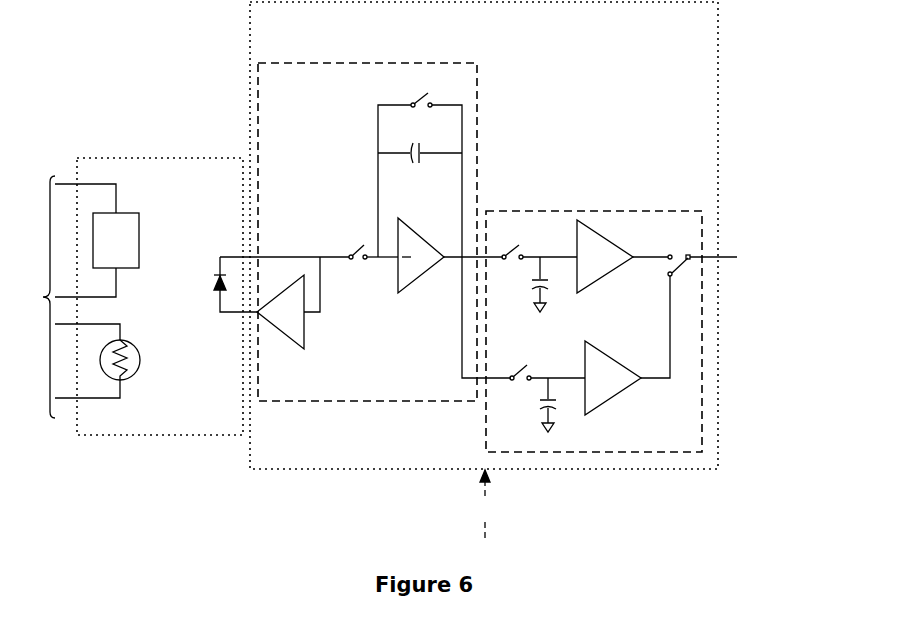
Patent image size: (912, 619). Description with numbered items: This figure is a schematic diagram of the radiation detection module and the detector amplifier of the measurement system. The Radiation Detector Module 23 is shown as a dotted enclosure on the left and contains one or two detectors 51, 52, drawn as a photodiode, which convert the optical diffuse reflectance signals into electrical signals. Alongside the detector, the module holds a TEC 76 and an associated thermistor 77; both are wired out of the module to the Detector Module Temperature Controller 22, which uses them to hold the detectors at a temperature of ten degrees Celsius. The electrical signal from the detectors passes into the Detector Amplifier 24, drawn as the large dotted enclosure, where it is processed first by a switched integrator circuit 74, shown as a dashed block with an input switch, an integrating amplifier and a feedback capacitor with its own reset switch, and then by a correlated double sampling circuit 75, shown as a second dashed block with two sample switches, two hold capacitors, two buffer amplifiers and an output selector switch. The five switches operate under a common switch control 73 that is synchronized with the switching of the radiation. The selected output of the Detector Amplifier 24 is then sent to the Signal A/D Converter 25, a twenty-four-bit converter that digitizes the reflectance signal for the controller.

The Detector Module Temperature Controller 22 is at (29, 297).
The Radiation Detection Module 23 is at (160, 157).
The Detector Amplifier 24 is at (723, 176).
The Signal A/D Converter 25 is at (760, 263).
The detector 51 is at (205, 300).
The detector 52 is at (205, 300).
The switch control 73 is at (465, 523).
The switched integrator circuit 74 is at (367, 63).
The correlated double sampling circuit 75 is at (592, 211).
The TEC 76 is at (143, 236).
The thermistor 77 is at (145, 358).